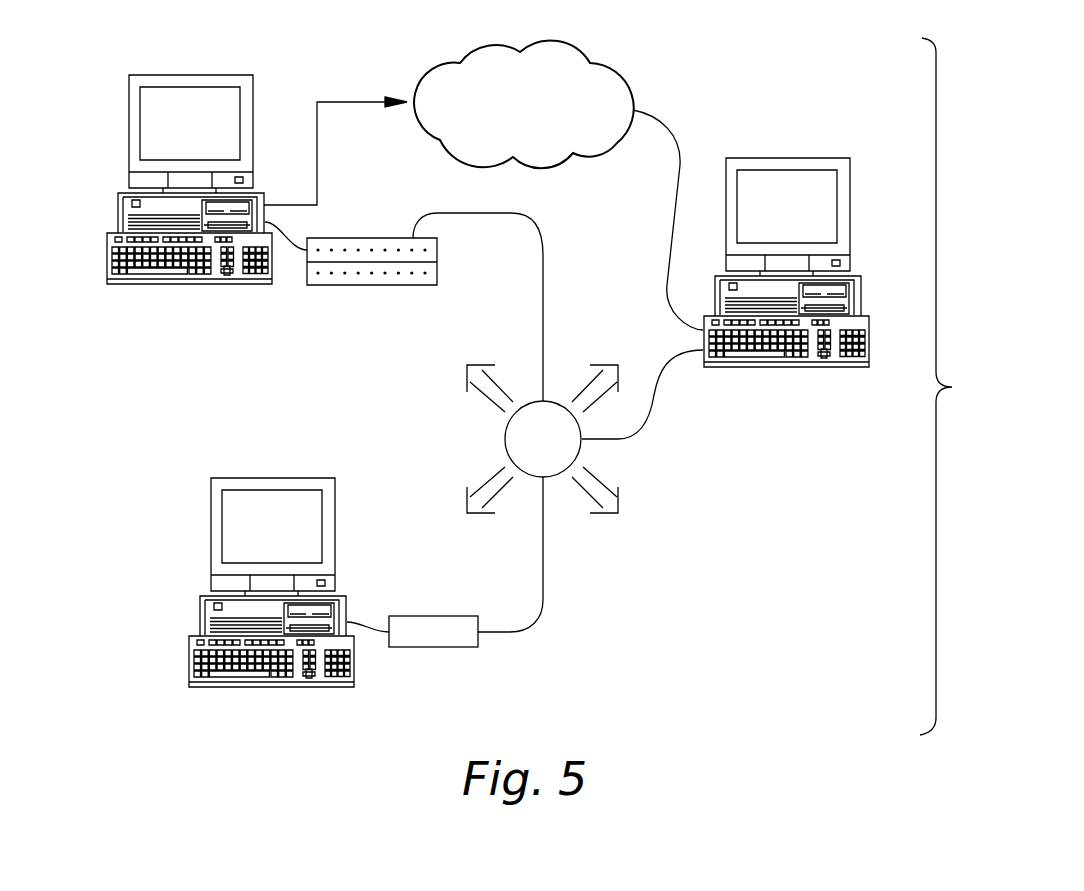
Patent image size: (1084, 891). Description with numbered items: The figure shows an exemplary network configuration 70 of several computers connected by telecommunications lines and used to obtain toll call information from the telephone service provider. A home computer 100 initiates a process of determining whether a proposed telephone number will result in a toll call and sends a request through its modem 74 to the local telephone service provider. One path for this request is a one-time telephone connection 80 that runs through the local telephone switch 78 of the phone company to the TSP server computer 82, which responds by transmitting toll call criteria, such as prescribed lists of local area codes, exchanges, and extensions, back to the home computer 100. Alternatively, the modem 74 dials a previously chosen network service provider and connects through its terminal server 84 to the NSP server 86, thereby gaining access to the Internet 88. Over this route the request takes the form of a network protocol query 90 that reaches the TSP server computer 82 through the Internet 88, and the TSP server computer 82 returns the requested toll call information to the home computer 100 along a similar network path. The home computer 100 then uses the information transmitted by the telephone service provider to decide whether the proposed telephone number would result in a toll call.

The communication system 70 is at (715, 632).
The modem 74 is at (452, 647).
The local telephone switch 78 is at (503, 439).
The one-time telephone connection 80 is at (648, 426).
The TSP server computer 82 is at (863, 297).
The terminal server 84 is at (437, 270).
The NSP server 86 is at (118, 208).
The Internet 88 is at (567, 46).
The network protocol query 90 is at (688, 121).
The home computer 100 is at (198, 613).